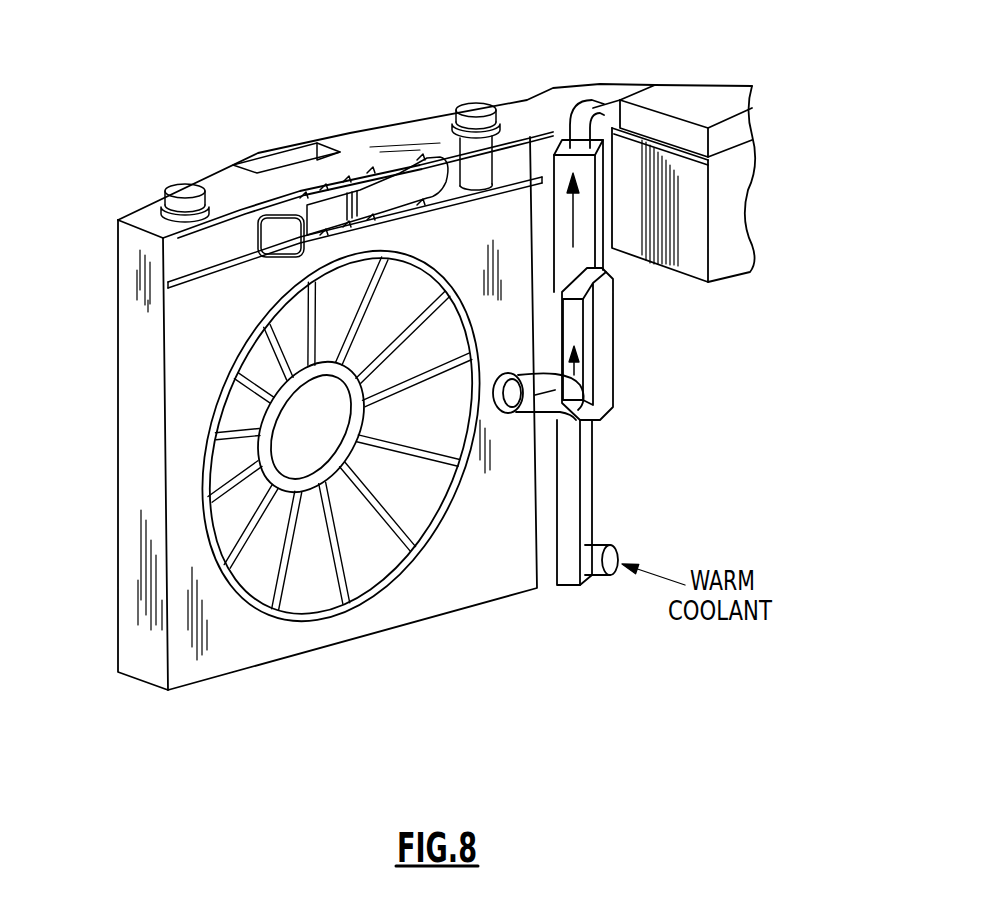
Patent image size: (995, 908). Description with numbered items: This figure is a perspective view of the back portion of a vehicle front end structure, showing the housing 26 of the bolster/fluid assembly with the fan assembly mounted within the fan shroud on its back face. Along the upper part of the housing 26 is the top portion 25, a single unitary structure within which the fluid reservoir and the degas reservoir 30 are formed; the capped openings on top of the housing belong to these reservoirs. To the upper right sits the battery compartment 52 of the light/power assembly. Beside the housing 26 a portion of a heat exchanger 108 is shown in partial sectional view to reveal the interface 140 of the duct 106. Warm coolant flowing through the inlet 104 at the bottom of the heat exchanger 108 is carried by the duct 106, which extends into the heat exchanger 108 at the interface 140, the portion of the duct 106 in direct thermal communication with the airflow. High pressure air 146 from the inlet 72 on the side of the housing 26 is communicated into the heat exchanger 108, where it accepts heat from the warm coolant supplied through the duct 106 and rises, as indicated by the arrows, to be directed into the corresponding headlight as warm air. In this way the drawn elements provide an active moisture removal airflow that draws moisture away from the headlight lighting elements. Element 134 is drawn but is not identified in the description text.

The top portion 25 is at (214, 178).
The housing 26 is at (125, 507).
The degas reservoir 30 is at (148, 212).
The battery compartment 52 is at (720, 104).
The inlet 72 is at (518, 410).
The inlet 104 is at (633, 544).
The duct 106 is at (570, 490).
The heat exchanger 108 is at (608, 278).
The upper hose 134 is at (580, 108).
The interface 140 is at (603, 338).
The high pressure airflow 146 is at (563, 405).